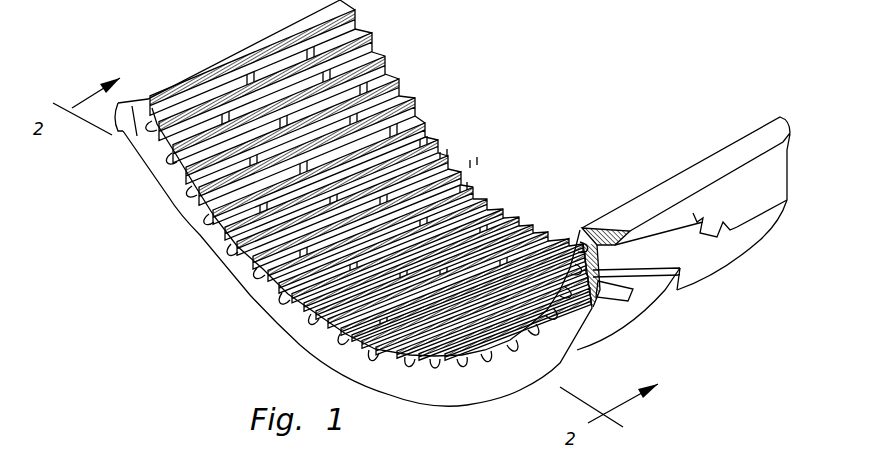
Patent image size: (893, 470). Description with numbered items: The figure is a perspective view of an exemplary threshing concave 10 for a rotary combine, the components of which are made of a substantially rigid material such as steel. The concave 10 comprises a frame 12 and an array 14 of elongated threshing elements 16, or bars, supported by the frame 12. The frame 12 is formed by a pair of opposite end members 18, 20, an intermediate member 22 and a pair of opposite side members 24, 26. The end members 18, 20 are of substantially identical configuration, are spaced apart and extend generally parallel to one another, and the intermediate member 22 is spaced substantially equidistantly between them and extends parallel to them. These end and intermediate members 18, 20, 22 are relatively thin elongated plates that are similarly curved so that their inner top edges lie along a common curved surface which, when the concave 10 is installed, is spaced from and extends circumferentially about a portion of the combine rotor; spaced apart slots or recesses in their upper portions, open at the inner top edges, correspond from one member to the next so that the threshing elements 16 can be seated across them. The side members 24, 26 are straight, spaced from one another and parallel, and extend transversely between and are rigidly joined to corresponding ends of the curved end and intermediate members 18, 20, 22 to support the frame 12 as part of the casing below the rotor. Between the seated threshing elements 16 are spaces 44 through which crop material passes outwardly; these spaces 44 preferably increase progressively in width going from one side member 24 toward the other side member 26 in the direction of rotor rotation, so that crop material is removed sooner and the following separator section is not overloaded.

The threshing concave 10 is at (516, 79).
The frame 12 is at (163, 197).
The array of elongated threshing elements 14 is at (443, 147).
The threshing element 16 is at (560, 233).
The end member 18 is at (323, 340).
The end member 20 is at (397, 100).
The intermediate member 22 is at (417, 127).
The side member 24 is at (742, 152).
The side member 26 is at (220, 50).
The space between bars 44 is at (393, 100).